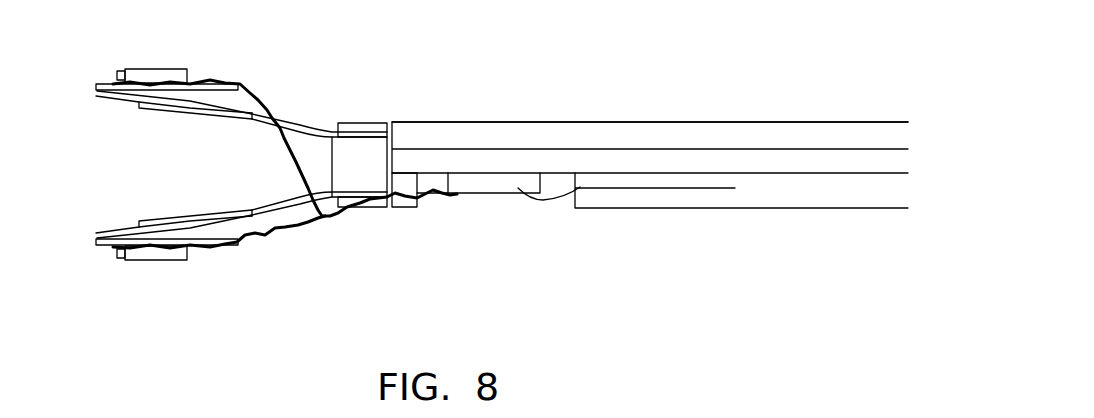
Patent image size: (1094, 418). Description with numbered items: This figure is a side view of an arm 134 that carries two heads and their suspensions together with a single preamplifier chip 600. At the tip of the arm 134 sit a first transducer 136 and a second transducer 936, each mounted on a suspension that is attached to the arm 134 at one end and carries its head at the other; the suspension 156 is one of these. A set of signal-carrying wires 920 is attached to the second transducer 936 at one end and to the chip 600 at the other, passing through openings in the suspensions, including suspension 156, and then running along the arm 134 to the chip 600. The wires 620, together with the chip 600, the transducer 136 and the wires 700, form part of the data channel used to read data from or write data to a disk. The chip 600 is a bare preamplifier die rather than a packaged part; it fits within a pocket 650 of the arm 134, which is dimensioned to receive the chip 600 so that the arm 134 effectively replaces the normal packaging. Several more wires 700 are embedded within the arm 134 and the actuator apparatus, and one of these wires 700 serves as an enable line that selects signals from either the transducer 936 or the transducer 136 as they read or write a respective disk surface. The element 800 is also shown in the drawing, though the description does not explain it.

The arm 134 is at (727, 132).
The first transducer 136 is at (120, 260).
The suspension 156 is at (168, 116).
The chip 600 is at (485, 187).
The wires 620 is at (298, 233).
The pocket 650 is at (573, 200).
The wires 700 is at (705, 190).
The housing 800 is at (642, 160).
The signal-carrying wires 920 is at (268, 104).
The second transducer 936 is at (127, 70).